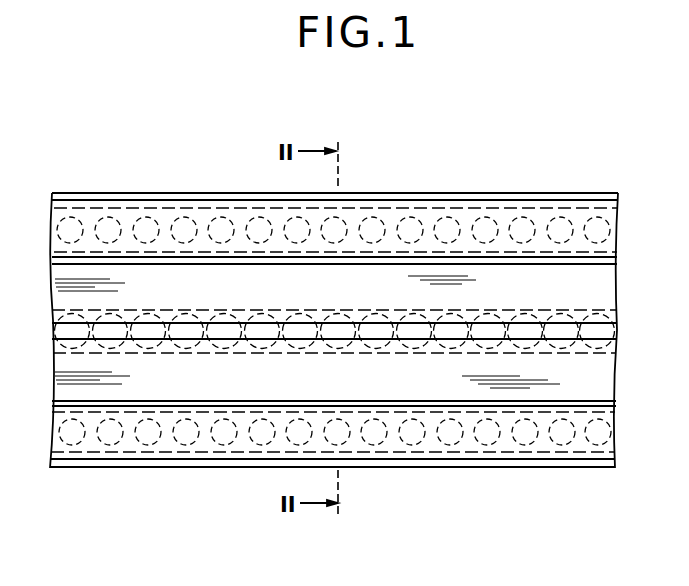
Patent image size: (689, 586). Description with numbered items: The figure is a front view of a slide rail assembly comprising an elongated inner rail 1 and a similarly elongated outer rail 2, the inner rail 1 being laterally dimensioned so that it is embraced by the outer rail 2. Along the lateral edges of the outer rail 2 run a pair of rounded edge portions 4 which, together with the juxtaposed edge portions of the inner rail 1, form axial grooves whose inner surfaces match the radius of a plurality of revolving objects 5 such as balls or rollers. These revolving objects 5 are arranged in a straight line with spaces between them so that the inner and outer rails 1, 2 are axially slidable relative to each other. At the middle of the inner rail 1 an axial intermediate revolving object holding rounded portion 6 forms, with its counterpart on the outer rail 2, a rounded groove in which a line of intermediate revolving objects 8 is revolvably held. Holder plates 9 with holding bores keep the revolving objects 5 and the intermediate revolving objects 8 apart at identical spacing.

The inner rail 1 is at (599, 294).
The outer rail 2 is at (212, 192).
The rounded edge portions 4 is at (618, 224).
The revolving objects 5 is at (146, 222).
The intermediate revolving object holding rounded portion 6 is at (602, 330).
The intermediate revolving objects 8 is at (223, 318).
The holder plates 9 is at (570, 206).